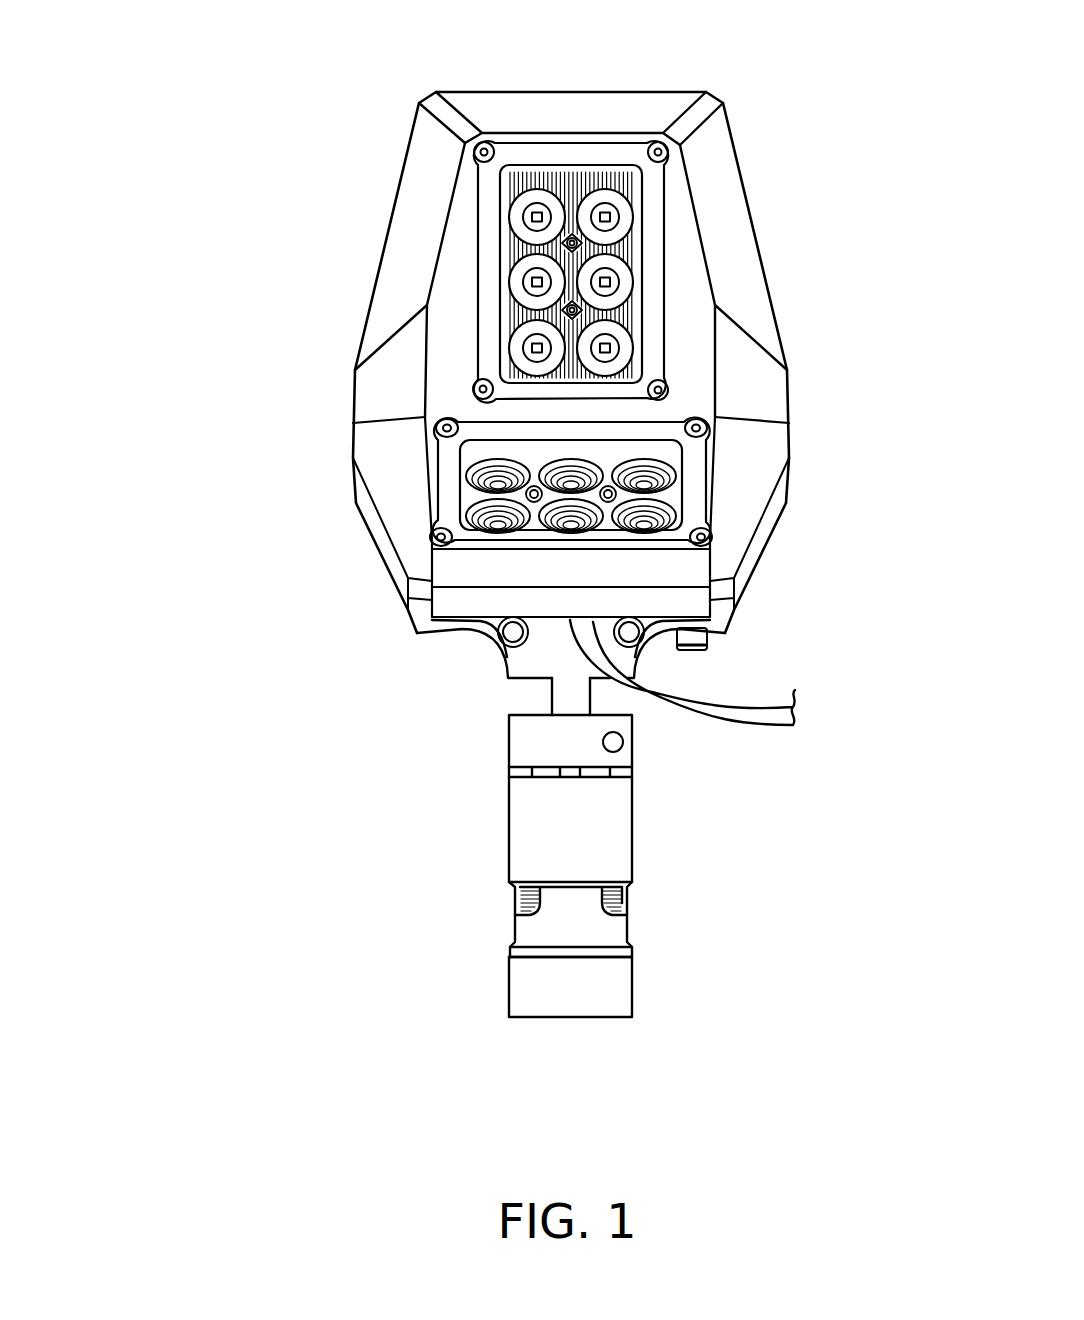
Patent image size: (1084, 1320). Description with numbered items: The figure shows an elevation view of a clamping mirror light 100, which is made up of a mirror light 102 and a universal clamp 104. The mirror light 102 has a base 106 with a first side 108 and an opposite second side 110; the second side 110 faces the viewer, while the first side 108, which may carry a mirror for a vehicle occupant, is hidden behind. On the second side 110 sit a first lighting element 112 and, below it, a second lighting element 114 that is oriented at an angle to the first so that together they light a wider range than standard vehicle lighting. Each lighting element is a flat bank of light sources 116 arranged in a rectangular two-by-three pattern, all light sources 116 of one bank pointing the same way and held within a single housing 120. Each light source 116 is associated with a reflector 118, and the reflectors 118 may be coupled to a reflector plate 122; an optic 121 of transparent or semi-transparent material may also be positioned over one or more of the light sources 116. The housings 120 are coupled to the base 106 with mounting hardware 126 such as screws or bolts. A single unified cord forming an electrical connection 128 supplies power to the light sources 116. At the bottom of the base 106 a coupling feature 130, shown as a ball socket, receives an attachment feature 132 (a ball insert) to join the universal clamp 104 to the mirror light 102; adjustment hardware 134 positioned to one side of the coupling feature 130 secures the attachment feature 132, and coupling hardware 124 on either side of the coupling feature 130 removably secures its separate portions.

The clamping mirror light 100 is at (262, 45).
The mirror light 102 is at (366, 303).
The universal clamp 104 is at (502, 811).
The base 106 is at (757, 237).
The first side 108 is at (643, 84).
The second side 110 is at (696, 317).
The first lighting element 112 is at (466, 232).
The second lighting element 114 is at (426, 492).
The light sources 116 is at (525, 208).
The reflector 118 is at (548, 195).
The housing 120 is at (650, 210).
The optic 121 is at (632, 175).
The reflector plate 122 is at (502, 308).
The coupling hardware 124 is at (480, 642).
The mounting hardware 126 is at (473, 389).
The electrical connection 128 is at (790, 728).
The coupling feature 130 is at (513, 668).
The attachment feature 132 is at (592, 692).
The adjustment hardware 134 is at (709, 640).